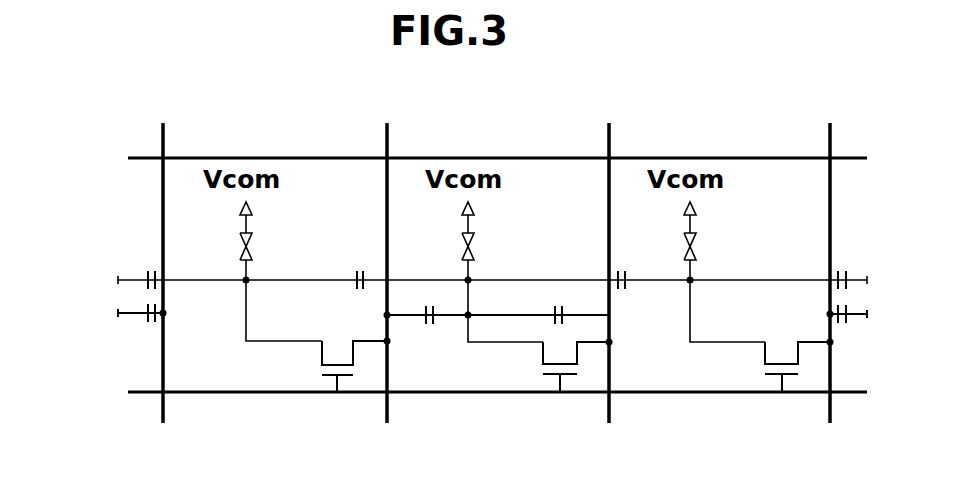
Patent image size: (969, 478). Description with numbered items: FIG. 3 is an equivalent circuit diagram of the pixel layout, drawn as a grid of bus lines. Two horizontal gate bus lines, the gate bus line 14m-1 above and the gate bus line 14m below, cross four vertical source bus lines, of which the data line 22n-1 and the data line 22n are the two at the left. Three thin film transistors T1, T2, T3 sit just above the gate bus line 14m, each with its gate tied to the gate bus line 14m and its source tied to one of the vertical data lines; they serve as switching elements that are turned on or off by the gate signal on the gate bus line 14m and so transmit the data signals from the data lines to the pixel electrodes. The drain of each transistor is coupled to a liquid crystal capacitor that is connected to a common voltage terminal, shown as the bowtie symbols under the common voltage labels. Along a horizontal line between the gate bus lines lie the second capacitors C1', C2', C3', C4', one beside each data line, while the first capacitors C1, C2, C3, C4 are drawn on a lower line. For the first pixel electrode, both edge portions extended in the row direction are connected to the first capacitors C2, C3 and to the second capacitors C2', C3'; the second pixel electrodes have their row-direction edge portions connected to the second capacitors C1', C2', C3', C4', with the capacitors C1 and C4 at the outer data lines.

The gate line (row m-1) 14m-1 is at (447, 160).
The gate bus line 14m is at (465, 392).
The data line (column n-1) 22n-1 is at (163, 292).
The source bus line 22n is at (381, 292).
The first capacitor C1 is at (140, 331).
The second capacitor C1' is at (148, 263).
The first capacitor C2 is at (498, 332).
The second capacitor C2' is at (358, 263).
The first capacitor C3 is at (541, 307).
The second capacitor C3' is at (637, 266).
The first capacitor C4 is at (848, 331).
The second capacitor C4' is at (851, 263).
The thin film transistor T1 is at (335, 366).
The thin film transistor T2 is at (555, 367).
The thin film transistor T3 is at (778, 367).